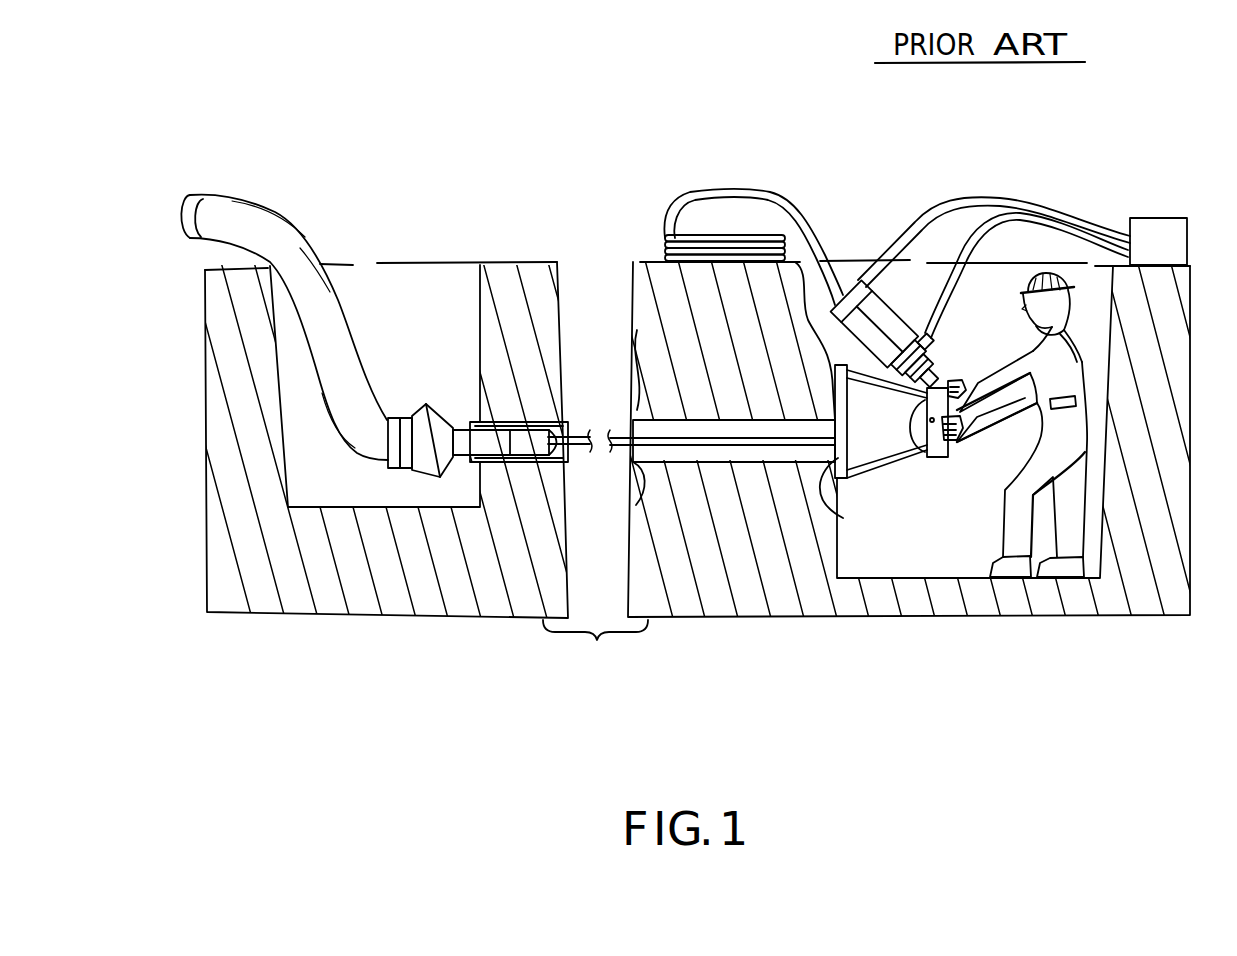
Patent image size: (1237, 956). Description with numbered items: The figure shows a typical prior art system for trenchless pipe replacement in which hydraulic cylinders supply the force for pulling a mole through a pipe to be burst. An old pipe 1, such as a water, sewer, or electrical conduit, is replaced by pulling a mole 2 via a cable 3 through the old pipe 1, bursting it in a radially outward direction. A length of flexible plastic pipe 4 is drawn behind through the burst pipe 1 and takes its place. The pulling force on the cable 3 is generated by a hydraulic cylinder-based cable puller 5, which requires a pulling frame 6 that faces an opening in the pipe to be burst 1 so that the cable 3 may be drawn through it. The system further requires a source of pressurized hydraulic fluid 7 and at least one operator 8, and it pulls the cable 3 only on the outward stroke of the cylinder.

The old pipe 1 is at (618, 430).
The mole 2 is at (446, 405).
The cable 3 is at (593, 434).
The flexible plastic pipe 4 is at (268, 210).
The hydraulic cylinder-based cable puller 5 is at (857, 282).
The pulling frame 6 is at (902, 463).
The source of pressurized hydraulic fluid 7 is at (1152, 220).
The operator 8 is at (1072, 334).